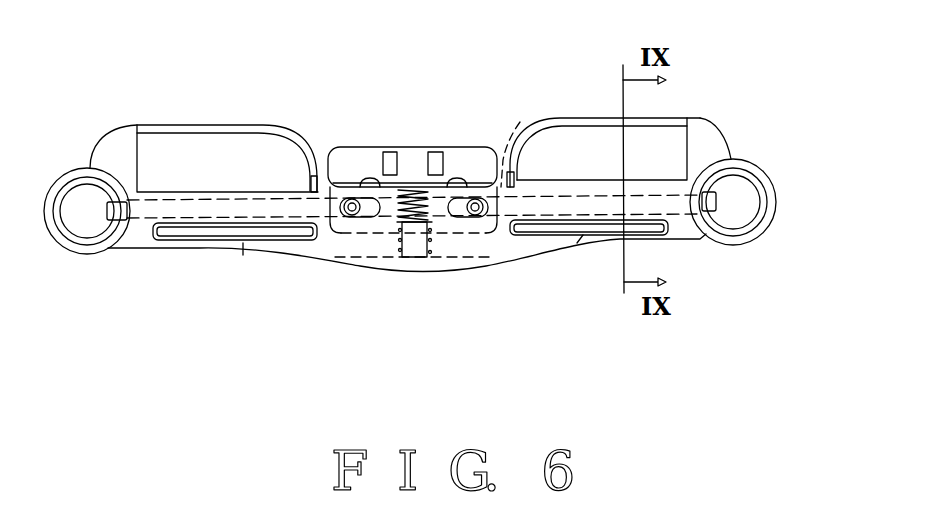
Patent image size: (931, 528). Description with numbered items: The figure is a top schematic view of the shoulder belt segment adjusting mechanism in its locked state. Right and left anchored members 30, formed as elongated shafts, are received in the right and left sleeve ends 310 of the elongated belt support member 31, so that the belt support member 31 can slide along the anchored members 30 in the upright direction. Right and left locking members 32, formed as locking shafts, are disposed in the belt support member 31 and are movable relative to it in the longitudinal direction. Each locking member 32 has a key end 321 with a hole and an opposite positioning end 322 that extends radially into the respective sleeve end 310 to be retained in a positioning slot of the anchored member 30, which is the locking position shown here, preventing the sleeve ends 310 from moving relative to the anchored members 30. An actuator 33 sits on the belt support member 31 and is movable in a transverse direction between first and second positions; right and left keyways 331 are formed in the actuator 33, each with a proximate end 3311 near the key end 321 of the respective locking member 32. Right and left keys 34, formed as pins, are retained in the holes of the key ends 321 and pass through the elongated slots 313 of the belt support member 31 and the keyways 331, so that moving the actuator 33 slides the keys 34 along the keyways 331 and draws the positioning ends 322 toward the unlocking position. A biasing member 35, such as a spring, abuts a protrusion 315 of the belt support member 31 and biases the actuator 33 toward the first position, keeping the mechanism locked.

The anchored member 30 is at (717, 199).
The belt support member 31 is at (518, 250).
The sleeve end 310 is at (90, 255).
The elongated slot 313 is at (378, 213).
The protrusion 315 is at (403, 275).
The locking member 32 is at (696, 143).
The key end 321 is at (520, 122).
The positioning end 322 is at (760, 168).
The actuator 33 is at (415, 147).
The keyway 331 is at (368, 181).
The proximate end 3311 is at (478, 216).
The key 34 is at (362, 212).
The biasing member 35 is at (407, 170).